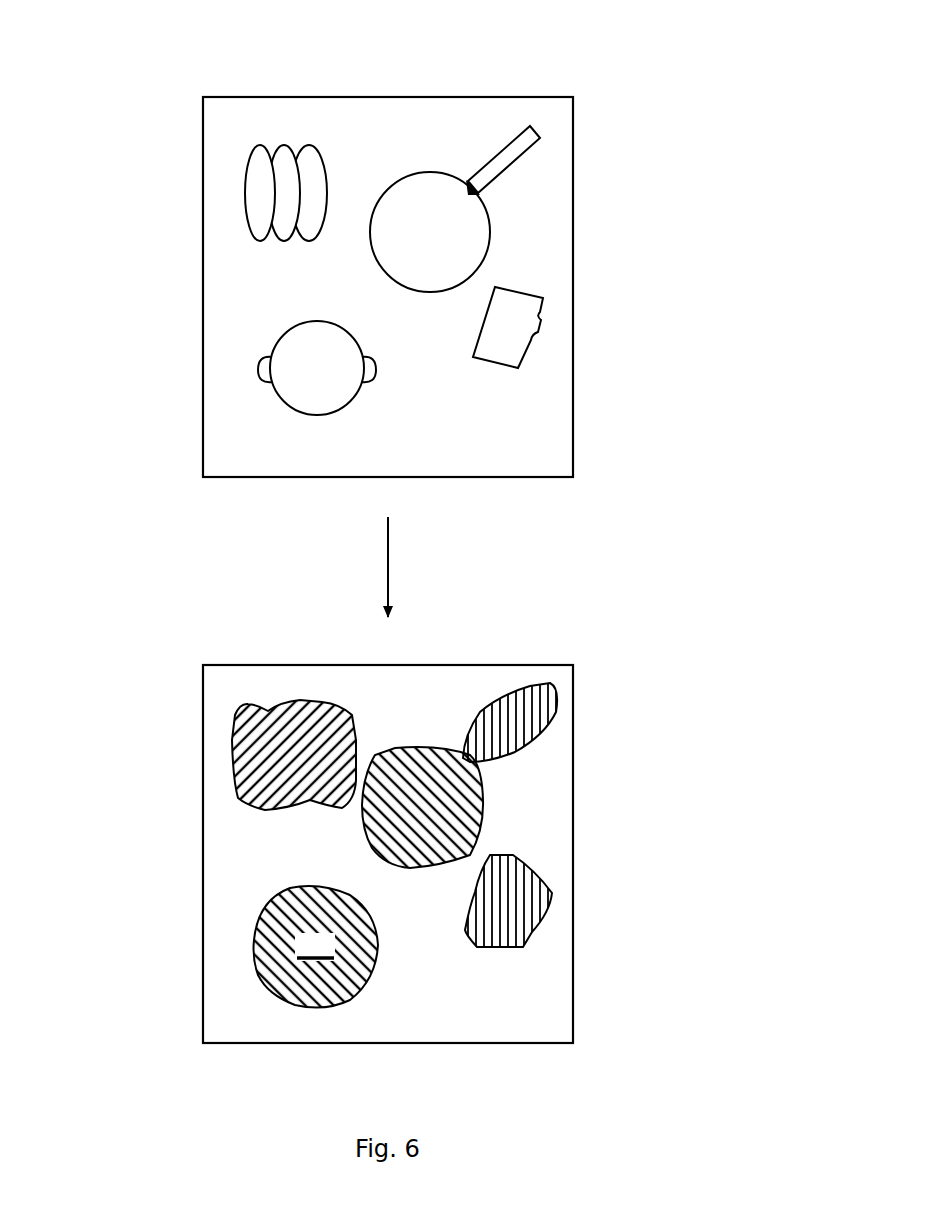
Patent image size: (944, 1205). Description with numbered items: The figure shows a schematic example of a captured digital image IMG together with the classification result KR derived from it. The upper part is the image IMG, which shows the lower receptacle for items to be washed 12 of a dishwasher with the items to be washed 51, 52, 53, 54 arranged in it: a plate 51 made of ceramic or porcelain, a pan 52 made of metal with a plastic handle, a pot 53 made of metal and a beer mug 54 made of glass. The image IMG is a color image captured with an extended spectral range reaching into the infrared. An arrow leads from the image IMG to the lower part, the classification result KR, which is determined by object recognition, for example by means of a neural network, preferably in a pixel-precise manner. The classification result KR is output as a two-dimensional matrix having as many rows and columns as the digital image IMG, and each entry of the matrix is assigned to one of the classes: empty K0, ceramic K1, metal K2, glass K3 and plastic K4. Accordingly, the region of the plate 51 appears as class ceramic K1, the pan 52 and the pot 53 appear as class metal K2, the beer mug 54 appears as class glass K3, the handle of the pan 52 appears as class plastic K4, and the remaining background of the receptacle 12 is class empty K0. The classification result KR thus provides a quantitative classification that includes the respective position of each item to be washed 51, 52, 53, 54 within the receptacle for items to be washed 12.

The lower receptacle for items to be washed 12 is at (575, 235).
The captured image IMG is at (346, 287).
The plate 51 is at (271, 82).
The pan 52 is at (426, 146).
The pot 53 is at (317, 440).
The beer mug 54 is at (559, 323).
The classification result KR is at (324, 854).
The class empty K0 is at (441, 926).
The class ceramic K1 is at (308, 767).
The class metal K2 is at (441, 821).
The class glass K3 is at (528, 910).
The class plastic K4 is at (523, 733).